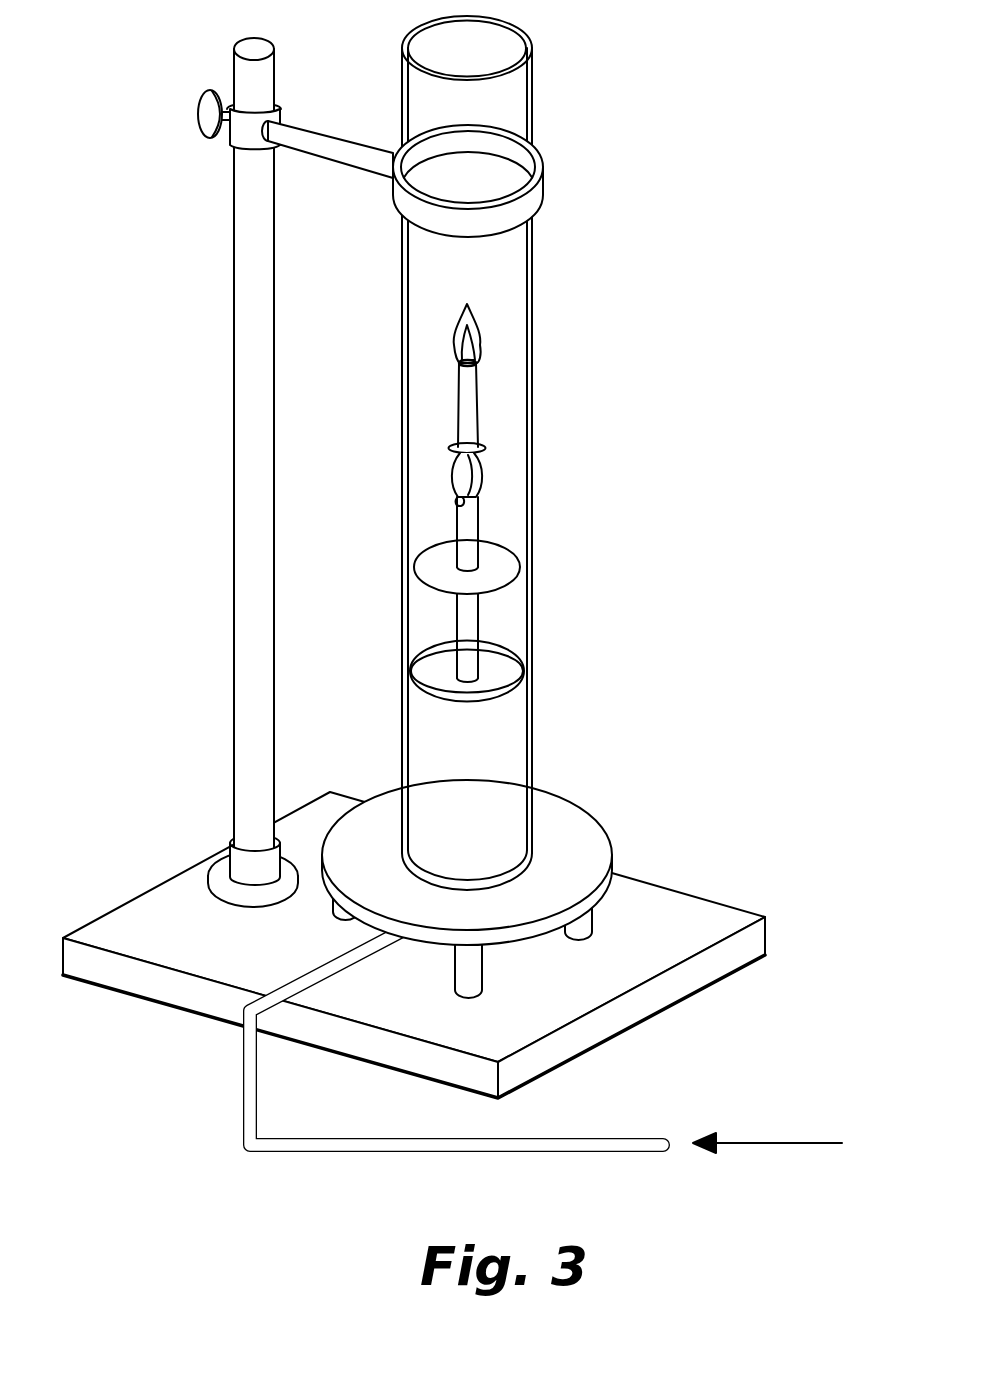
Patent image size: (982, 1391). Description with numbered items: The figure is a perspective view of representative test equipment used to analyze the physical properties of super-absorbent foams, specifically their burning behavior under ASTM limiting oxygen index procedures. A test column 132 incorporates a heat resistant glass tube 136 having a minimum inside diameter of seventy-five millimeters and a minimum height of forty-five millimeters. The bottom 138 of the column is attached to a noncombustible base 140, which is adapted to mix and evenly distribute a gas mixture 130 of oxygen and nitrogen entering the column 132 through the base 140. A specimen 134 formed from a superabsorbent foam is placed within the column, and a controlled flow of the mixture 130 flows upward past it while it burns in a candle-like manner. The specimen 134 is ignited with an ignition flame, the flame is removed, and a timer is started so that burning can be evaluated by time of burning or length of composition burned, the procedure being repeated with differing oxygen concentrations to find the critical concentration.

The mixture 130 is at (792, 1141).
The test column 132 is at (506, 487).
The specimen 134 is at (468, 387).
The heat resistant glass tube 136 is at (534, 608).
The bottom 138 is at (604, 863).
The noncombustible base 140 is at (385, 798).